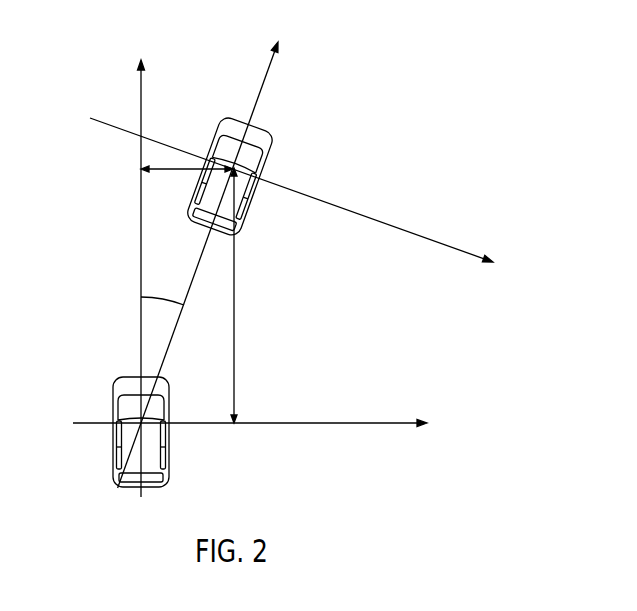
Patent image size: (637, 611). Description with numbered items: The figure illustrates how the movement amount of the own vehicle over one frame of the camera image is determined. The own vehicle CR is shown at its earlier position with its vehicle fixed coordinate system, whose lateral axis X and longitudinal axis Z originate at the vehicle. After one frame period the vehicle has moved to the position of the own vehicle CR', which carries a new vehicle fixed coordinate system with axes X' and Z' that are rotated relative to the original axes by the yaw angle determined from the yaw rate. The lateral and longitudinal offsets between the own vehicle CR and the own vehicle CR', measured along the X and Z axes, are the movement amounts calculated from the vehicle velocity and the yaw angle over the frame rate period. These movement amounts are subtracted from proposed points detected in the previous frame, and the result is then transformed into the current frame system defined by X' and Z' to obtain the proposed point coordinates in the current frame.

The own vehicle CR is at (108, 431).
The own vehicle in current frame CR' is at (269, 176).
The Z axis of vehicle fixed coordinate system Z is at (126, 278).
The X axis of vehicle fixed coordinate system X is at (250, 439).
The Z' axis of vehicle fixed coordinate system in current frame Z' is at (198, 264).
The X' axis of vehicle fixed coordinate system in current frame X' is at (291, 207).